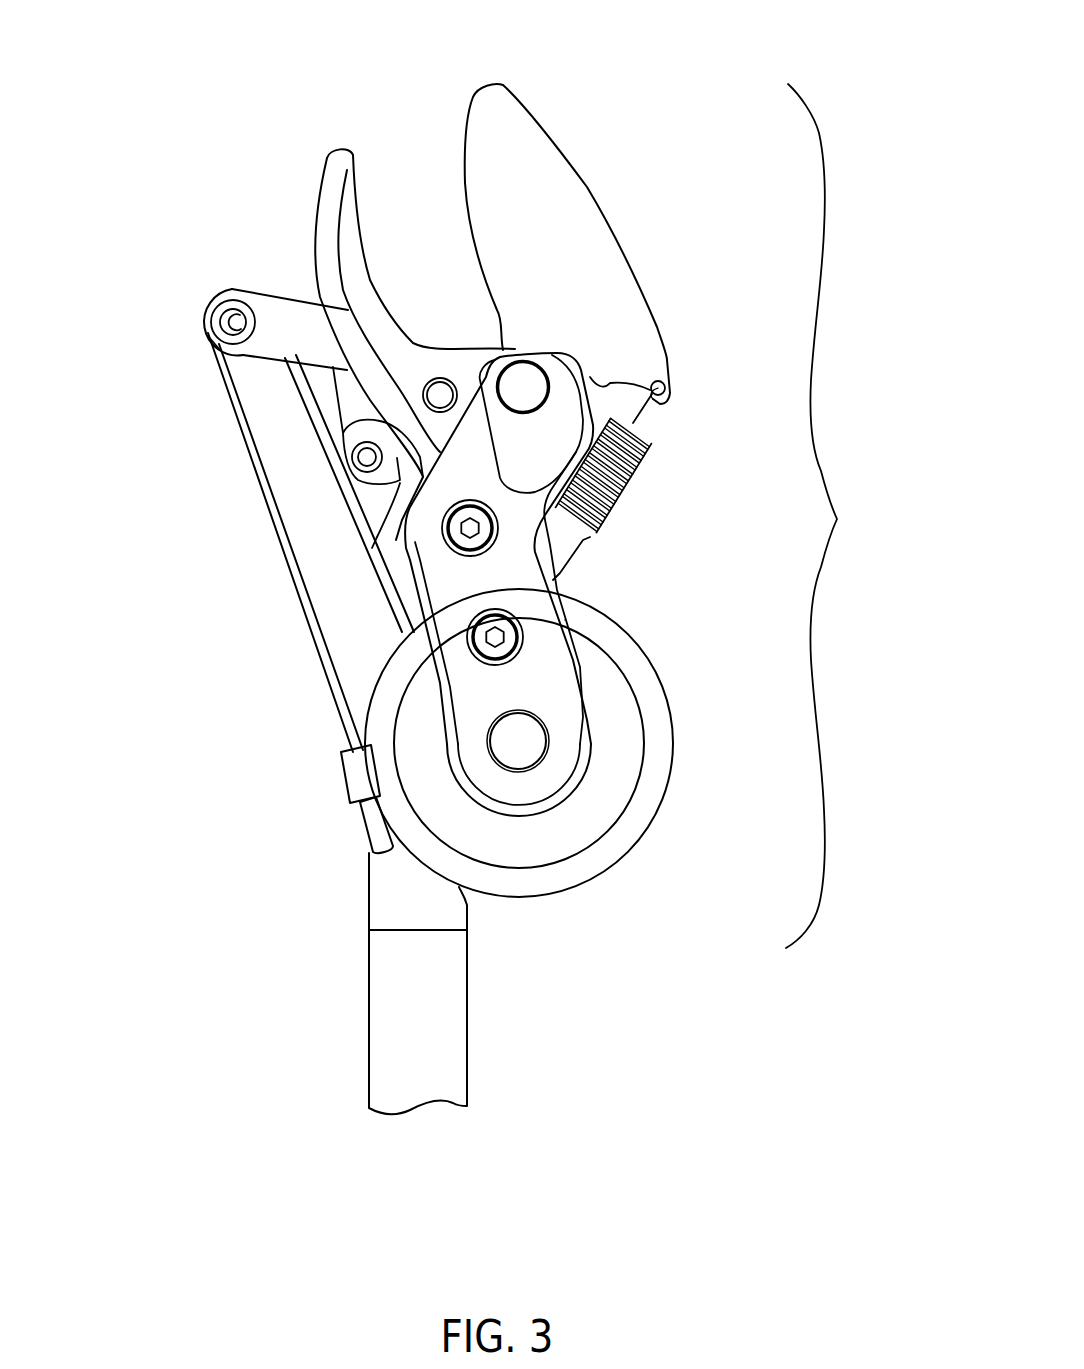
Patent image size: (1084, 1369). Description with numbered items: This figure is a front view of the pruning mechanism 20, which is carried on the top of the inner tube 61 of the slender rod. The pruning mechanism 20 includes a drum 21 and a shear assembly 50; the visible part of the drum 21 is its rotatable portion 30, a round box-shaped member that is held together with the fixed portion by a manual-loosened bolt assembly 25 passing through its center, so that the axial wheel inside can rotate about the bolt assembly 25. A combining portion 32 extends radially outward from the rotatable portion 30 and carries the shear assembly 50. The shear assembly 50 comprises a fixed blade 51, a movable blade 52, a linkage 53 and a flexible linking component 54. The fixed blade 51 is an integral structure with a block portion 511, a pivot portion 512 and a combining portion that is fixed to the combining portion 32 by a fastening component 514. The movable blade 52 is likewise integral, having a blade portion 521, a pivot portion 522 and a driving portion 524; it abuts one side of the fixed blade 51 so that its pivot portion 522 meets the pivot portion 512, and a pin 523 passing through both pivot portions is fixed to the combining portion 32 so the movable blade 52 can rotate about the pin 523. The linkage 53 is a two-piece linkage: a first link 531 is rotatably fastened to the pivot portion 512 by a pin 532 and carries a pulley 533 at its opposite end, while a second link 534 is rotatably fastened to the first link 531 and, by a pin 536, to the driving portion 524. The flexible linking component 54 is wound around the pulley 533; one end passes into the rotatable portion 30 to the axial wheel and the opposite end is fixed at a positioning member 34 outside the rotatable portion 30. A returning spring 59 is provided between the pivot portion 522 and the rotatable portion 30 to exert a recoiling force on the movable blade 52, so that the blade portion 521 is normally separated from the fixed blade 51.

The pruning mechanism 20 is at (832, 516).
The drum 21 is at (551, 733).
The manual-loosened bolt assembly 25 is at (520, 758).
The rotatable portion 30 is at (665, 732).
The combining portion 32 is at (537, 612).
The positioning member 34 is at (347, 781).
The shear assembly 50 is at (568, 202).
The fixed blade 51 is at (378, 291).
The block portion 511 is at (353, 201).
The pivot portion 512 is at (483, 542).
The fastening component 514 is at (466, 548).
The movable blade 52 is at (568, 202).
The blade portion 521 is at (467, 183).
The pivot portion 522 is at (592, 375).
The pin 523 is at (523, 372).
The driving portion 524 is at (309, 485).
The linkage 53 is at (240, 293).
The first link 531 is at (287, 312).
The pin 532 is at (426, 388).
The pulley 533 is at (228, 374).
The second link 534 is at (343, 407).
The pin 536 is at (353, 456).
The flexible linking component 54 is at (293, 557).
The returning spring 59 is at (630, 473).
The inner tube 61 is at (378, 1013).